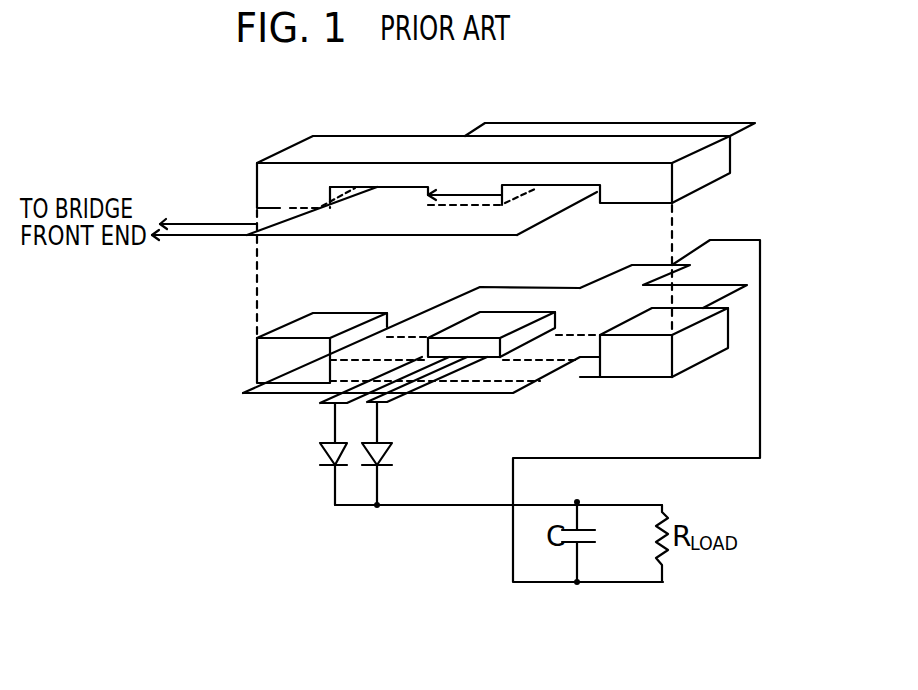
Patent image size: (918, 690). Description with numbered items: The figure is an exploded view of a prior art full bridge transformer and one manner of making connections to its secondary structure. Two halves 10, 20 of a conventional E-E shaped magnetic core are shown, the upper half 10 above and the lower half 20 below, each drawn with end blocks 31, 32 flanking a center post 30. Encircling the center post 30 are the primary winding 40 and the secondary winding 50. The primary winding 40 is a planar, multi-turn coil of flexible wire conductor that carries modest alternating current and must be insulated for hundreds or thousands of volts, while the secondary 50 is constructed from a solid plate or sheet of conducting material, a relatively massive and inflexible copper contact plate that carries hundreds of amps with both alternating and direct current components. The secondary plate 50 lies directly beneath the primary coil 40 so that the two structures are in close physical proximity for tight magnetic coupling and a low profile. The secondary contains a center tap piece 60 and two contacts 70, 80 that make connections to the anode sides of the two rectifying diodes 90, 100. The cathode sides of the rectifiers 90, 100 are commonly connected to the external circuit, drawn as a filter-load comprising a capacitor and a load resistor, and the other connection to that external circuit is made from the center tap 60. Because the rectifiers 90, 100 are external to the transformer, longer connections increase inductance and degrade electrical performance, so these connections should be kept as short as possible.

The core half 10 is at (650, 147).
The core half 20 is at (635, 363).
The center post 30 is at (470, 195).
The end ground block 31 is at (641, 193).
The end ground block 32 is at (280, 207).
The primary winding 40 is at (372, 217).
The secondary winding 50 is at (283, 397).
The center tap piece 60 is at (628, 276).
The contact 70 is at (320, 403).
The contact 80 is at (384, 404).
The rectifying diode 90 is at (322, 450).
The rectifying diode 100 is at (389, 450).